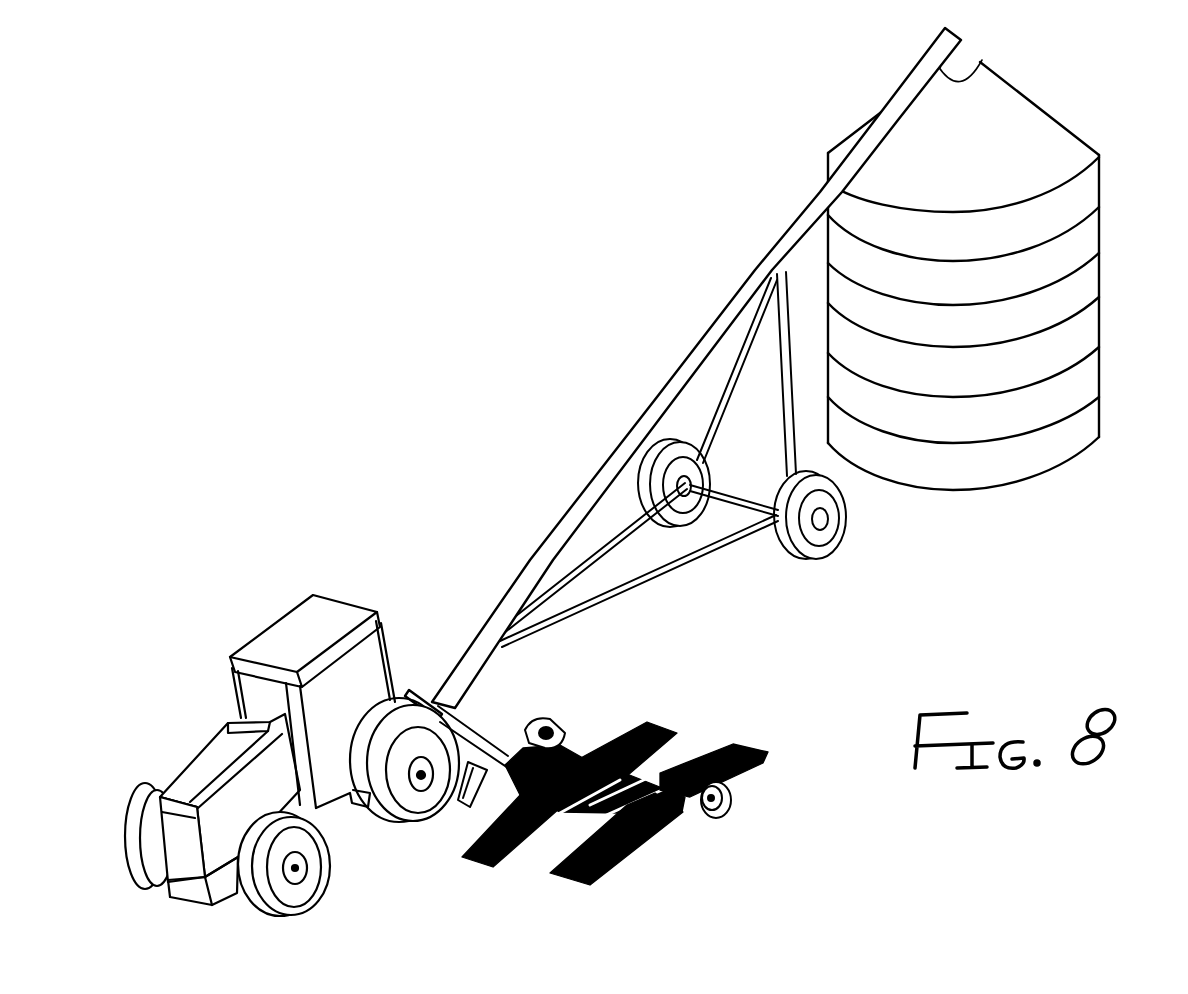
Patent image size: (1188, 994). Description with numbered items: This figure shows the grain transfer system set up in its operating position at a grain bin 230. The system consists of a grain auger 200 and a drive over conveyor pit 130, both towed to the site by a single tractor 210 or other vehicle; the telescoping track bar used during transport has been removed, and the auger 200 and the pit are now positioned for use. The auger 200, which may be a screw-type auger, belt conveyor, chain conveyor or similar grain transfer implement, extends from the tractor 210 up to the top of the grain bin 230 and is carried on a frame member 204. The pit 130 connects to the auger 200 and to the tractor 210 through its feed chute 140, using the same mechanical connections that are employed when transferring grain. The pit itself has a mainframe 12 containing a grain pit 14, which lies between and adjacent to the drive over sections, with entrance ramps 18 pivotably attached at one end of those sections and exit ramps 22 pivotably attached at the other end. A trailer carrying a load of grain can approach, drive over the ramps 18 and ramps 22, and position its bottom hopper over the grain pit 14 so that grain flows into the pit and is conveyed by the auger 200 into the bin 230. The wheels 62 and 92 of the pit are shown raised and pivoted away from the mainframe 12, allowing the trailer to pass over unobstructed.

The mainframe 12 is at (573, 822).
The grain pit 14 is at (652, 775).
The entrance ramps 18 is at (713, 737).
The exit ramps 22 is at (490, 870).
The wheels 62 is at (560, 718).
The wheels 92 is at (733, 818).
The drive over conveyor pit 130 is at (757, 748).
The feed chute 140 is at (477, 733).
The grain auger 200 is at (610, 462).
The frame member 204 is at (632, 580).
The tractor 210 is at (283, 612).
The grain bin 230 is at (1100, 240).